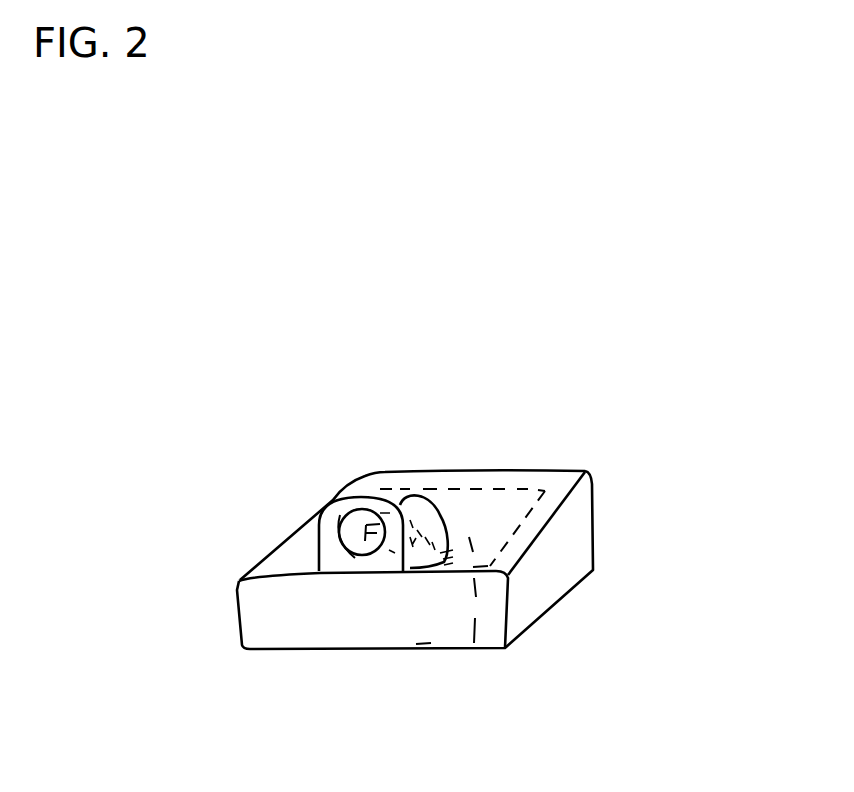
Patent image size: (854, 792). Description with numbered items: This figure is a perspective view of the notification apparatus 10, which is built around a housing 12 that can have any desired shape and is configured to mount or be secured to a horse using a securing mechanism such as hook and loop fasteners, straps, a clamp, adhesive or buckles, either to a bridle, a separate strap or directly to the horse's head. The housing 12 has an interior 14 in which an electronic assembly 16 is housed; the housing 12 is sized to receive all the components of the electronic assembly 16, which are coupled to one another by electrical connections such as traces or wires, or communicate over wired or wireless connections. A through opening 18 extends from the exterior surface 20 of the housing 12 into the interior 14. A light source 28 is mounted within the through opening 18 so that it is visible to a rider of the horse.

The notification apparatus 10 is at (585, 408).
The housing 12 is at (590, 572).
The interior 14 is at (500, 489).
The electronic assembly 16 is at (472, 663).
The through opening 18 is at (338, 510).
The exterior surface 20 is at (290, 557).
The light source 28 is at (361, 552).